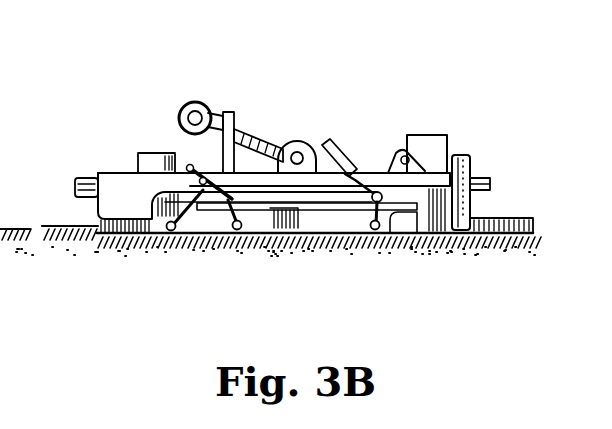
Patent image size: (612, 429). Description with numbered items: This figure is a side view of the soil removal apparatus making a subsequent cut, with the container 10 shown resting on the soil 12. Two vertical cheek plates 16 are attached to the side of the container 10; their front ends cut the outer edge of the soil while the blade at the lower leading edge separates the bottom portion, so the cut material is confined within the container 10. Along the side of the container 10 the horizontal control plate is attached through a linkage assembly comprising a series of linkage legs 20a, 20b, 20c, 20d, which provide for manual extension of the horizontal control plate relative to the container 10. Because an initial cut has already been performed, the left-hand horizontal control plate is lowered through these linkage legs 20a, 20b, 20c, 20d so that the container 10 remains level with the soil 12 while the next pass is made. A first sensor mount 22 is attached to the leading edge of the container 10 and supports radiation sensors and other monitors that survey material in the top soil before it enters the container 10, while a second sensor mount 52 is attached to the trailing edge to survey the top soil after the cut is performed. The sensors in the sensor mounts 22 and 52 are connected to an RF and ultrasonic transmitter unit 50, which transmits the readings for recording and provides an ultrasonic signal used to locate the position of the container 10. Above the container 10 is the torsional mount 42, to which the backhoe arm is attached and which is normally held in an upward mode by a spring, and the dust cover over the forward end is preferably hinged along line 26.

The container 10 is at (378, 172).
The soil 12 is at (495, 216).
The vertical cheek plates 16 is at (150, 200).
The linkage leg 20a is at (171, 231).
The linkage leg 20b is at (226, 229).
The linkage leg 20c is at (357, 172).
The linkage leg 20d is at (407, 237).
The first sensor mount 22 is at (70, 172).
The hinge line 26 is at (187, 162).
The torsional mount 42 is at (185, 100).
The RF and ultrasonic transmitter unit 50 is at (425, 135).
The second sensor mount 52 is at (478, 178).